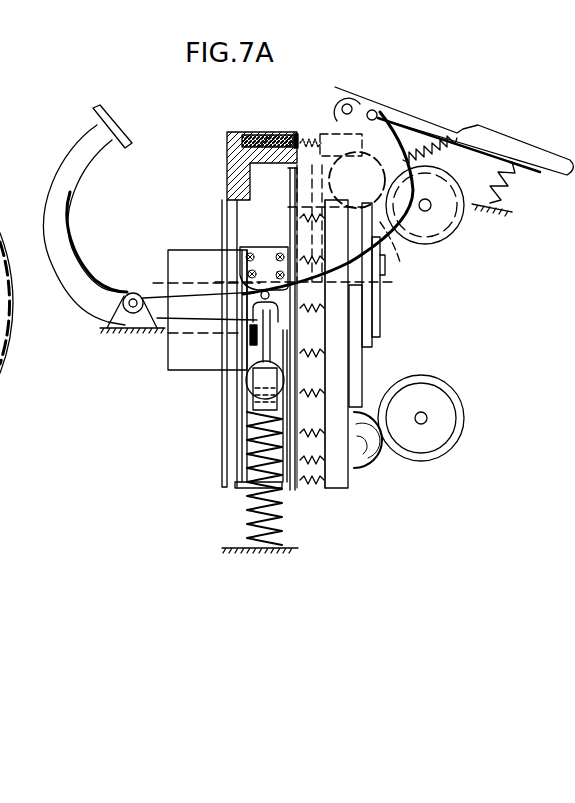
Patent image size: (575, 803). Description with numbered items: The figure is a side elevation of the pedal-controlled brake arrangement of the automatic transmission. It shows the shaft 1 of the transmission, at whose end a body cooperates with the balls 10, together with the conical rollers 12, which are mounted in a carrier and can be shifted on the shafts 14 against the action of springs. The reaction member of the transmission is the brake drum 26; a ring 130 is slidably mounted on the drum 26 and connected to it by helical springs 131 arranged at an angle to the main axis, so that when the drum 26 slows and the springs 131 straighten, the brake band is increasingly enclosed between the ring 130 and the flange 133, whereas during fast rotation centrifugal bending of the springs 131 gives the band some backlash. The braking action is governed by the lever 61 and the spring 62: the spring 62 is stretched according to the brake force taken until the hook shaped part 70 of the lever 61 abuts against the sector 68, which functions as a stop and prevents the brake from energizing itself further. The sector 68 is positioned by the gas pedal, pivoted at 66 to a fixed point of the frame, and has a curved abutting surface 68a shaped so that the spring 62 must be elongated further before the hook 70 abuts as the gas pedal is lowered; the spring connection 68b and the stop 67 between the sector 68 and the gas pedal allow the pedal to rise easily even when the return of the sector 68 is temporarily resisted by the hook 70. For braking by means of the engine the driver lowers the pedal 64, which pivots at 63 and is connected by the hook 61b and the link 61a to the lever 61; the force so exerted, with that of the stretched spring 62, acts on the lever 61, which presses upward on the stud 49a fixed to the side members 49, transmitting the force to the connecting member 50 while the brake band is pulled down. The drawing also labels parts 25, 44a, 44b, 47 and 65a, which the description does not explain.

The shaft 1 is at (381, 317).
The balls 10 is at (404, 251).
The conical rollers 12 is at (448, 229).
The shafts 14 is at (426, 210).
The drum 25 is at (368, 168).
The brake drum 26 is at (270, 150).
The spring 44a is at (238, 298).
The bar 44b is at (255, 134).
The mounting block 47 is at (242, 250).
The side members 49 is at (244, 444).
The stud 49a is at (238, 296).
The connecting member 50 is at (240, 470).
The lever 61 is at (248, 411).
The link 61a is at (247, 388).
The hook 61b is at (248, 348).
The spring 62 is at (246, 515).
The pivot 63 is at (134, 293).
The pedal 64 is at (78, 267).
The return spring 65a is at (503, 193).
The pivot 66 is at (350, 108).
The stop 67 is at (377, 111).
The sector 68 is at (398, 148).
The abutting surface 68a is at (356, 260).
The spring connection 68b is at (450, 141).
The hook shaped part 70 is at (248, 342).
The ring 130 is at (292, 484).
The helical springs 131 is at (318, 392).
The flange 133 is at (224, 484).